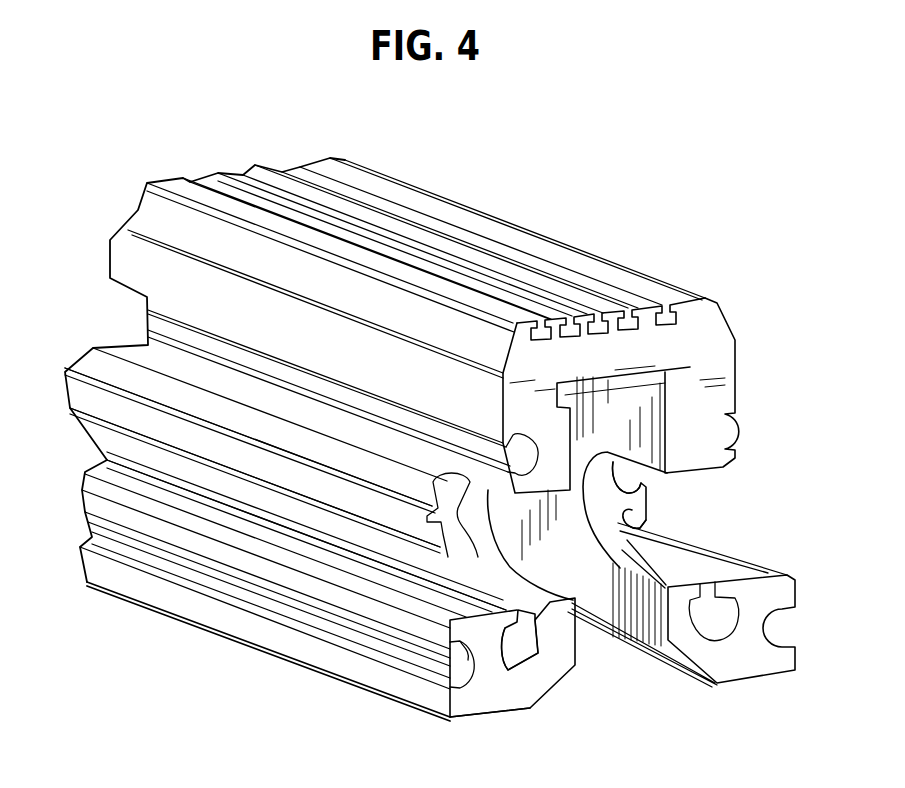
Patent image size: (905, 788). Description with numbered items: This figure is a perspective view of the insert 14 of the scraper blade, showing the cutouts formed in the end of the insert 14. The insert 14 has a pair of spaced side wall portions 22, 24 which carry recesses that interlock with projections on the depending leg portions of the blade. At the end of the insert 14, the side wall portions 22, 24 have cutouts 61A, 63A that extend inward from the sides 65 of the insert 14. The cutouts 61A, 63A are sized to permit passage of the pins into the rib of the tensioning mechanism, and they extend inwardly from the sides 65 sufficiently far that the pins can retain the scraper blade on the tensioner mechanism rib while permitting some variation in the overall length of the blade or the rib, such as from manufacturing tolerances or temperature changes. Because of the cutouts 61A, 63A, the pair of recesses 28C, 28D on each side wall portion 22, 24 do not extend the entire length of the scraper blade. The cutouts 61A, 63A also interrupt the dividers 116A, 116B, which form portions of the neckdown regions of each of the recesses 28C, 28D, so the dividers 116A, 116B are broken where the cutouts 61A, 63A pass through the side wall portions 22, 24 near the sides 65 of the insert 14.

The insert 14 is at (720, 333).
The side wall portion 22 is at (555, 627).
The side wall portion 24 is at (689, 612).
The sides 65 is at (492, 700).
The cutout 61A is at (477, 557).
The cutout 63A is at (622, 549).
The divider 116A is at (273, 470).
The divider 116B is at (643, 496).
The recess 28C is at (378, 550).
The recess 28D is at (358, 468).